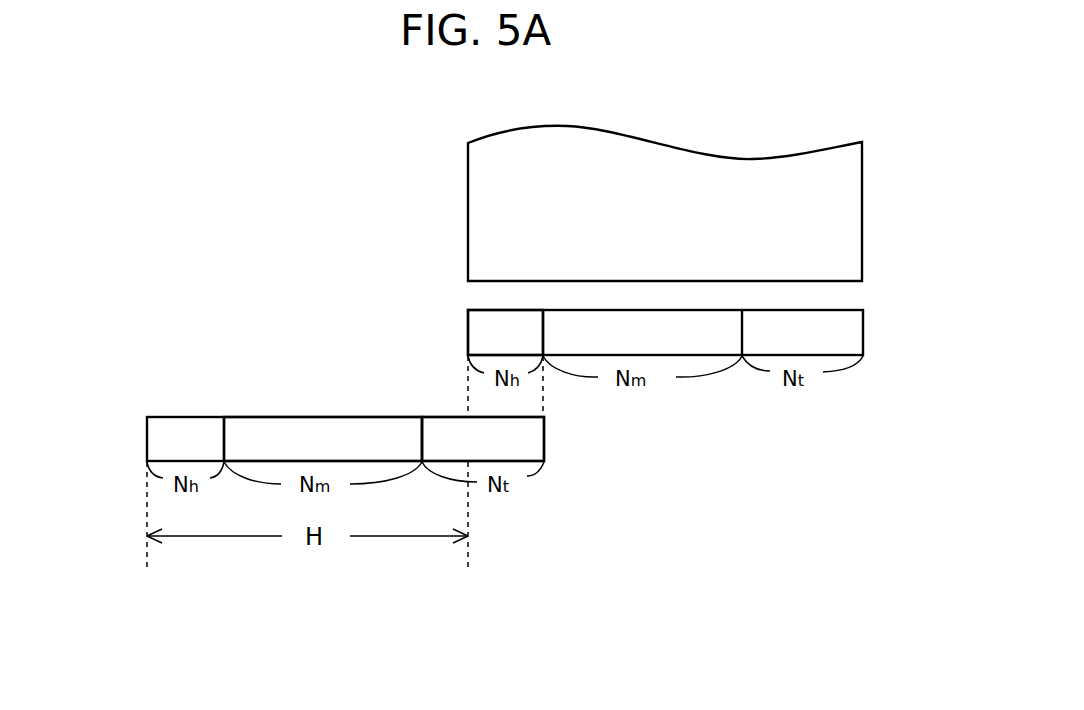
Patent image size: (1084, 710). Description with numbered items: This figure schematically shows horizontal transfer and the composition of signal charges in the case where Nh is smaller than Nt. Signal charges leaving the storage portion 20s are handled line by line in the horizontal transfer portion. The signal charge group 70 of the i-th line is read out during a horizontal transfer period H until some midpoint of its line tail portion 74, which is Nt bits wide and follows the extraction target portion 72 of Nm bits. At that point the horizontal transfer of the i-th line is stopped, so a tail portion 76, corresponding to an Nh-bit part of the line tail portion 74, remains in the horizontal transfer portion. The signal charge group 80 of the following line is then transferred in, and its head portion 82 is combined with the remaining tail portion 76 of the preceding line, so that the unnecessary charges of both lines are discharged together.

The storage portion 20s is at (493, 217).
The signal charge group 70 is at (140, 442).
The extraction target portion 72 is at (306, 422).
The line tail portion 74 is at (431, 422).
The tail portion 76 is at (528, 437).
The signal charge group 80 is at (870, 333).
The head portion 82 is at (480, 333).